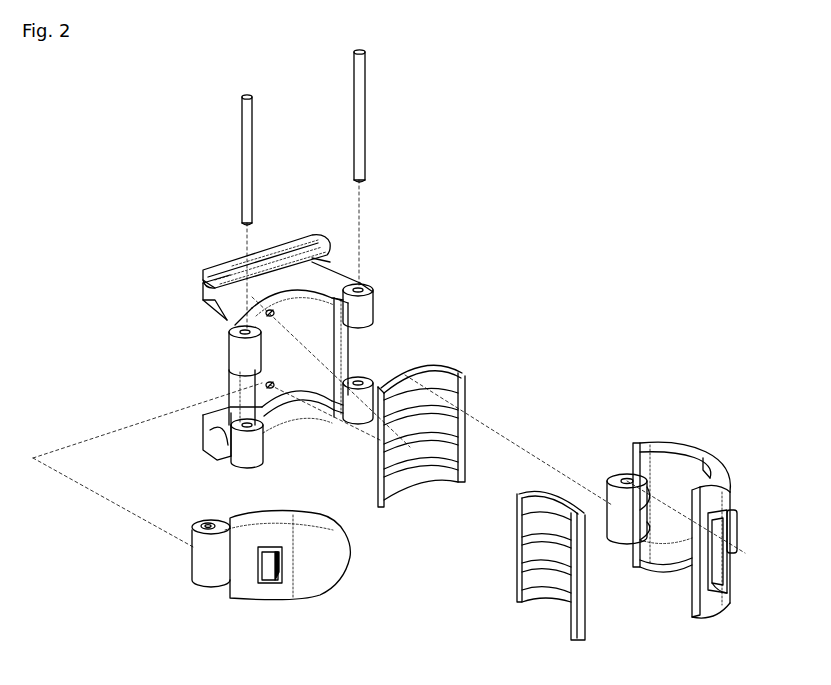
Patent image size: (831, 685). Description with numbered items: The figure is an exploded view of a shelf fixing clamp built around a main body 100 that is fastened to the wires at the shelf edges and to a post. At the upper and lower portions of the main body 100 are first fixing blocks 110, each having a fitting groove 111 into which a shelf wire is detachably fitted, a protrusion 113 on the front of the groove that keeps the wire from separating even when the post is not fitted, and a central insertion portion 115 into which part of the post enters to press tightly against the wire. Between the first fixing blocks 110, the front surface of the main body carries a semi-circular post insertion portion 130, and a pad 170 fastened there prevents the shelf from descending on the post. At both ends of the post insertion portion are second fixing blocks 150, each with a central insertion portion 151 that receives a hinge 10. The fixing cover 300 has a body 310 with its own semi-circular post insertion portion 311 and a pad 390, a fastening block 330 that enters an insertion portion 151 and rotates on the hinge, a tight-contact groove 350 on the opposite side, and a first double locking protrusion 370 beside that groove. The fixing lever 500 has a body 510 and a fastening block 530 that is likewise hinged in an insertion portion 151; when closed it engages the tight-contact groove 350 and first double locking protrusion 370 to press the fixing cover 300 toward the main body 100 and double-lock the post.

The hinge 10 is at (352, 122).
The main body 100 is at (301, 357).
The first fixing block 110 is at (212, 262).
The fitting groove 111 is at (203, 300).
The protrusion 113 is at (328, 242).
The insertion portion 115 is at (268, 262).
The post insertion portion 130 is at (345, 270).
The second fixing block 150 is at (229, 350).
The insertion portion 151 is at (350, 340).
The pad 170 is at (468, 387).
The fixing cover 300 is at (678, 510).
The body 310 is at (652, 443).
The post insertion portion 311 is at (673, 552).
The fastening block 330 is at (612, 478).
The tight-contact groove 350 is at (728, 572).
The first double locking protrusion 370 is at (738, 520).
The pad 390 is at (520, 578).
The fixing lever 500 is at (262, 563).
The body 510 is at (283, 512).
The fastening block 530 is at (195, 565).